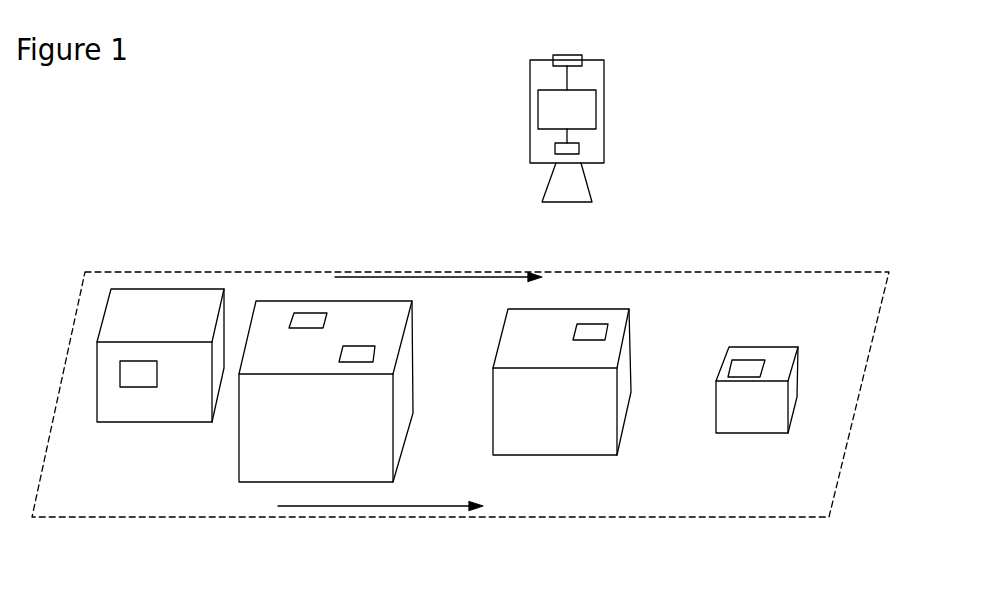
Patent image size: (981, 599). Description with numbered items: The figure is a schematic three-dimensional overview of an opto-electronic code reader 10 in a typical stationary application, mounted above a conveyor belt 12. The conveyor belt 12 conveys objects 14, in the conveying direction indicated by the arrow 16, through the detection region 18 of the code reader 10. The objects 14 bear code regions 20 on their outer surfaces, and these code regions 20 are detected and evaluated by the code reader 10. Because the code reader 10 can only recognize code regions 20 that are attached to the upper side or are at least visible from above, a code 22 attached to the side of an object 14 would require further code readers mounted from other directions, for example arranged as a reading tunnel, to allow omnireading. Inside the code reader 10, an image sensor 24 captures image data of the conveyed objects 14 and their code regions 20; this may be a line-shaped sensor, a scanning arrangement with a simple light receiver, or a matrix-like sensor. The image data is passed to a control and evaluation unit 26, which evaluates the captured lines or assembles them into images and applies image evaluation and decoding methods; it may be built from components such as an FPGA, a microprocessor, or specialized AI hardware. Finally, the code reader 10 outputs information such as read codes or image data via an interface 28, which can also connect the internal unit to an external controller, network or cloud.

The opto-electronic code reader 10 is at (597, 113).
The conveyor belt 12 is at (460, 420).
The objects 14 is at (447, 394).
The arrow 16 is at (380, 536).
The detection region 18 is at (518, 252).
The code regions 20 is at (527, 302).
The code 22 is at (123, 412).
The image sensor 24 is at (523, 174).
The control and evaluation unit 26 is at (604, 139).
The interface 28 is at (557, 35).